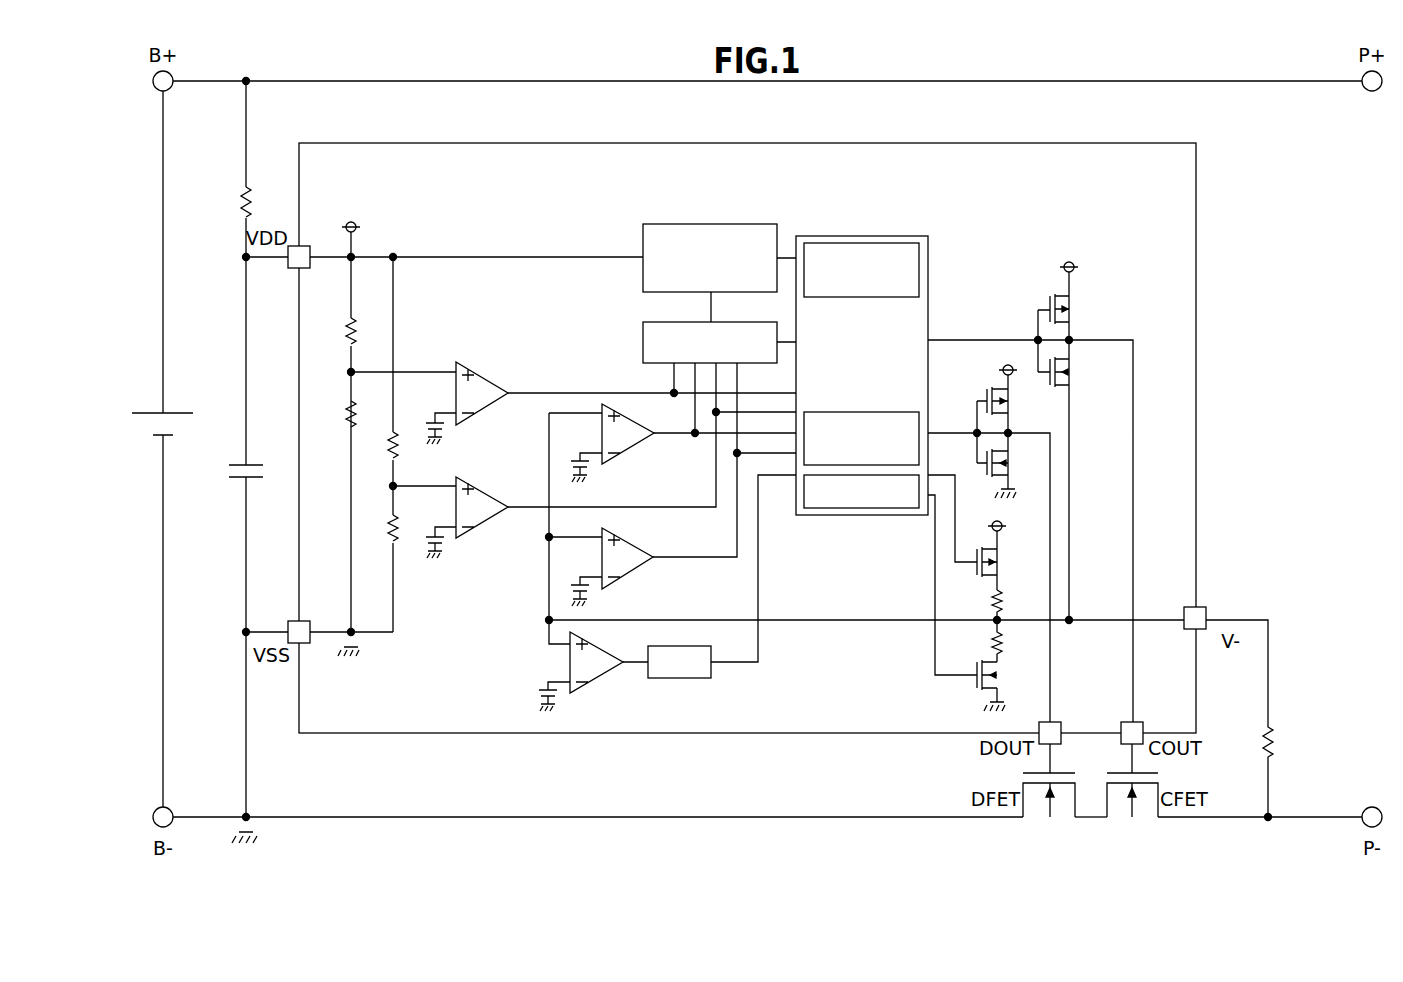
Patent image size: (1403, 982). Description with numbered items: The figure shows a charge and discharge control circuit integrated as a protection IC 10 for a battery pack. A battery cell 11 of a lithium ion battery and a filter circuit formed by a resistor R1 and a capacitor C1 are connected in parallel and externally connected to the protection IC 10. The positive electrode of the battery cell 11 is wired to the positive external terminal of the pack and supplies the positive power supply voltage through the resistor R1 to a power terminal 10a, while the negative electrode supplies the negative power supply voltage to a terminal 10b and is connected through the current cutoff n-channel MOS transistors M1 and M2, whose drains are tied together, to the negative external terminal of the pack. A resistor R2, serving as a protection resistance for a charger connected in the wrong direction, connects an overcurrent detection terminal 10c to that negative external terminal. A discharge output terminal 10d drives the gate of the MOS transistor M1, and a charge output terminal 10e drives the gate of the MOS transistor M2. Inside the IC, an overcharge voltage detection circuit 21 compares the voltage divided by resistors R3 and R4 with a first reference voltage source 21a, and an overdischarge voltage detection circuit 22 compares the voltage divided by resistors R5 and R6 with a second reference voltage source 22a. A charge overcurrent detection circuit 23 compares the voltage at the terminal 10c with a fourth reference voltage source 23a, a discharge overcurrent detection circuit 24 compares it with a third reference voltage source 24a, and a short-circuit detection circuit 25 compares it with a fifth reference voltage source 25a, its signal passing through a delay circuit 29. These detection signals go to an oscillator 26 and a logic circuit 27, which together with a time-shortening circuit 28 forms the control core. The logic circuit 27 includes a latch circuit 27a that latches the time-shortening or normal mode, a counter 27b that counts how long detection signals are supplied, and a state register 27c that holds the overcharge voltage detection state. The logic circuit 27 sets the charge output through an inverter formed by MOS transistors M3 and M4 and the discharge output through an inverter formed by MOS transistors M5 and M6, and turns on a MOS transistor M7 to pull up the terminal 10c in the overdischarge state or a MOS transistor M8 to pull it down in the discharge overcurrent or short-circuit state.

The protection IC 10 is at (1022, 142).
The terminal 10a is at (306, 246).
The terminal 10b is at (310, 645).
The terminal 10c is at (1202, 607).
The DOUT output terminal 10d is at (1057, 722).
The COUT output terminal 10e is at (1139, 722).
The battery cell 11 is at (143, 413).
The overcharge voltage detection circuit 21 is at (487, 370).
The first reference voltage source 21a is at (432, 424).
The overdischarge voltage detection circuit 22 is at (487, 485).
The second reference voltage source 22a is at (432, 537).
The charge overcurrent detection circuit 23 is at (622, 458).
The fourth reference voltage source 23a is at (580, 461).
The discharge overcurrent detection circuit 24 is at (622, 577).
The third reference voltage source 24a is at (580, 585).
The short-circuit detection circuit 25 is at (593, 683).
The fifth reference voltage source 25a is at (546, 690).
The oscillator 26 is at (740, 322).
The logic circuit 27 is at (864, 236).
The latch circuit 27a is at (918, 412).
The counter 27b is at (862, 515).
The state register 27c is at (920, 290).
The time-shortening circuit 28 is at (740, 224).
The delay circuit 29 is at (713, 678).
The MOS transistor M1 is at (1037, 817).
The MOS transistor M2 is at (1143, 817).
The MOS transistor M3 is at (1073, 301).
The MOS transistor M4 is at (1073, 480).
The MOS transistor M5 is at (1011, 399).
The MOS transistor M6 is at (1011, 465).
The MOS transistor M7 is at (1005, 570).
The MOS transistor M8 is at (1005, 665).
The resistor R1 is at (232, 202).
The resistor R2 is at (1239, 718).
The resistor R3 is at (338, 331).
The resistor R4 is at (338, 414).
The resistor R5 is at (380, 445).
The resistor R6 is at (380, 528).
The capacitor C1 is at (232, 458).